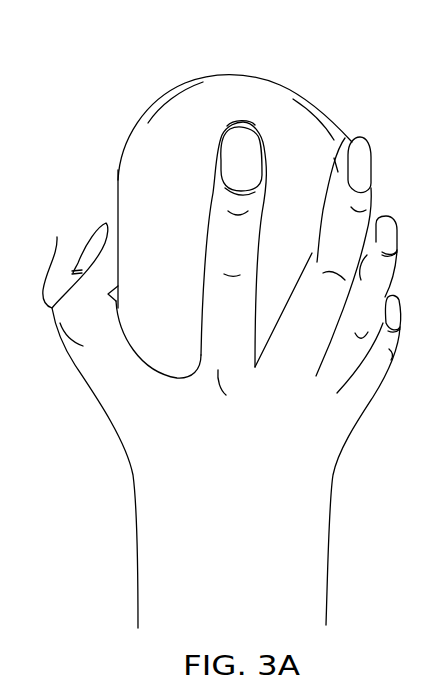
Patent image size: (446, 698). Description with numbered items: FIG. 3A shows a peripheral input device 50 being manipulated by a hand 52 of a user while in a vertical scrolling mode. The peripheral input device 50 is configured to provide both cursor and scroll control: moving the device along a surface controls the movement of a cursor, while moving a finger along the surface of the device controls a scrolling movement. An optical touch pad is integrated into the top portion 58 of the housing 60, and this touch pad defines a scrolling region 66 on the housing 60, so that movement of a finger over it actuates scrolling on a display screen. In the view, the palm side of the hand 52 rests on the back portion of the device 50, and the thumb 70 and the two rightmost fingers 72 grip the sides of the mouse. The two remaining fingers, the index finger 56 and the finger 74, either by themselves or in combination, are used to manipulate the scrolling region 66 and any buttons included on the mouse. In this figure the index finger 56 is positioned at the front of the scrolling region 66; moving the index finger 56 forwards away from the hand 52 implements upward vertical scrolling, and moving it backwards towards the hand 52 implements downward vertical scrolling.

The peripheral input device 50 is at (118, 174).
The hand 52 is at (173, 578).
The index finger 56 is at (267, 152).
The top portion 58 is at (170, 258).
The housing 60 is at (192, 147).
The scrolling region 66 is at (239, 122).
The thumb 70 is at (57, 237).
The two rightmost fingers 72 is at (397, 281).
The finger 74 is at (365, 145).